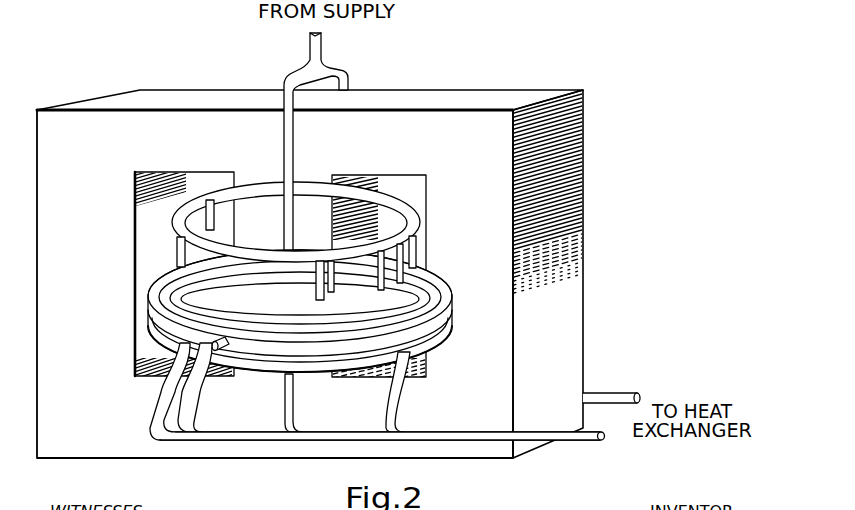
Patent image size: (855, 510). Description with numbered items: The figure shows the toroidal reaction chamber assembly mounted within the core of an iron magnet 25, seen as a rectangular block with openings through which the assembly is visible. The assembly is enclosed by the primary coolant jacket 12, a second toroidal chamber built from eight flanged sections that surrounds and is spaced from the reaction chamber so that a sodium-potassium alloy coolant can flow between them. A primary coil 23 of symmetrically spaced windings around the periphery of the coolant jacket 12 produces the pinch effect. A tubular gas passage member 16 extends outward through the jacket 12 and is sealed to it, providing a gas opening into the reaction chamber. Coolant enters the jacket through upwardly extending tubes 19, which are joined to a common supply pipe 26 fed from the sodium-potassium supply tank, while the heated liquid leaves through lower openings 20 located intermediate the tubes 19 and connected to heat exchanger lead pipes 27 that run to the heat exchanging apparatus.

The primary coolant jacket 12 is at (279, 296).
The tubular gas passage member 16 is at (231, 346).
The upwardly extending tubes 19 is at (175, 226).
The lower openings 20 is at (388, 398).
The primary coil 23 is at (160, 258).
The iron magnet core 25 is at (574, 132).
The common supply pipe 26 is at (323, 52).
The heat exchanger lead pipes 27 is at (627, 392).